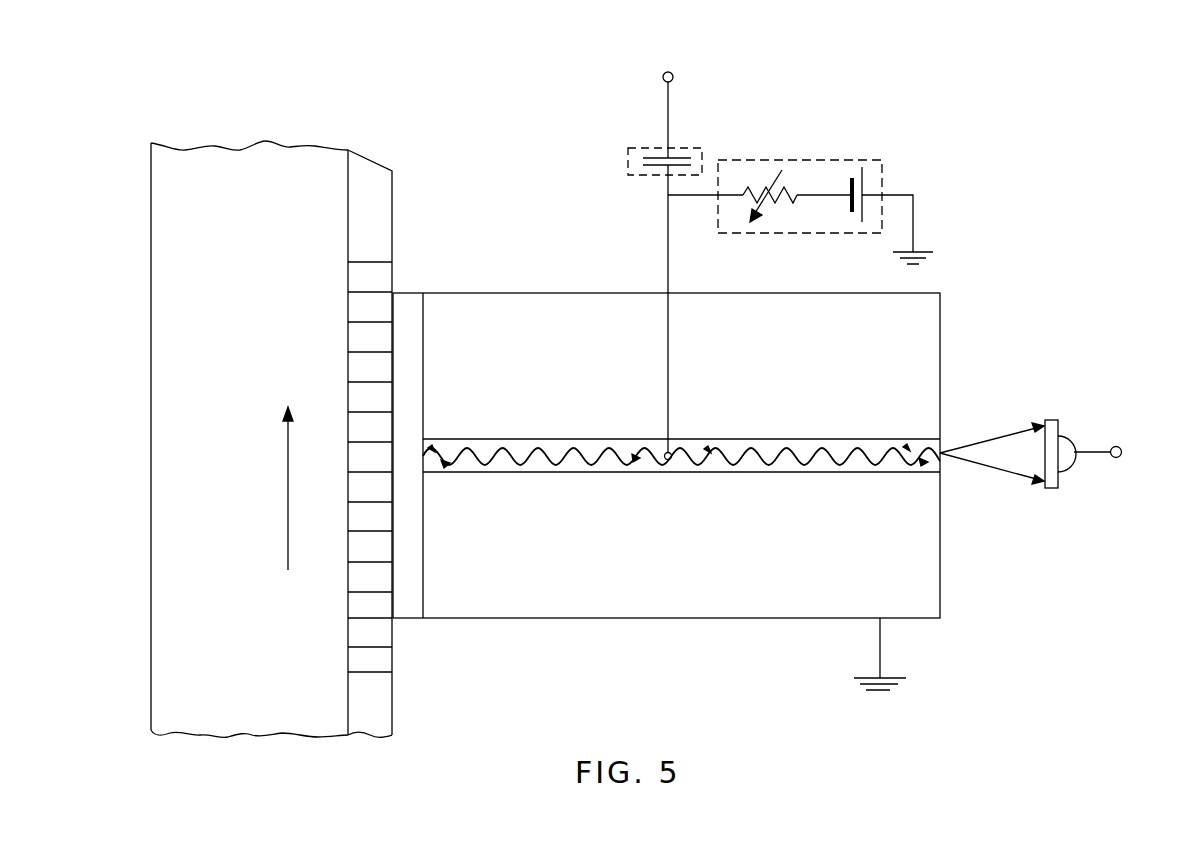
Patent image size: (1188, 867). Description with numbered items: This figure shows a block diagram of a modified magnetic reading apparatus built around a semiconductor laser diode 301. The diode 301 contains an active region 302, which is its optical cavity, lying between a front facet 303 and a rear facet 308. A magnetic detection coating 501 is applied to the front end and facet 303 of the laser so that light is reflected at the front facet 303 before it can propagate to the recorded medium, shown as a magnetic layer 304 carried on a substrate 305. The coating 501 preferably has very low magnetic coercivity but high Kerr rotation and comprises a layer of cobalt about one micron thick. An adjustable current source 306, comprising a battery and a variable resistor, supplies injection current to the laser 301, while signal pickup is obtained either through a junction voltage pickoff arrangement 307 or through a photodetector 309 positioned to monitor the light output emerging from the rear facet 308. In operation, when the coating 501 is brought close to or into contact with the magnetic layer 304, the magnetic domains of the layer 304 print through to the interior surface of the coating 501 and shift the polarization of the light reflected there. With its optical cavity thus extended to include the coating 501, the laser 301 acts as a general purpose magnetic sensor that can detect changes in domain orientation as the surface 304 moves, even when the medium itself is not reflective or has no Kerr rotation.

The semiconductor laser diode 301 is at (942, 585).
The active region 302 is at (862, 466).
The front facet 303 is at (426, 449).
The magnetic layer 304 is at (357, 177).
The substrate 305 is at (270, 162).
The adjustable current source 306 is at (812, 160).
The junction voltage pickoff arrangement 307 is at (677, 147).
The rear facet 308 is at (942, 447).
The photodetector 309 is at (1073, 442).
The magnetic detection coating 501 is at (408, 298).